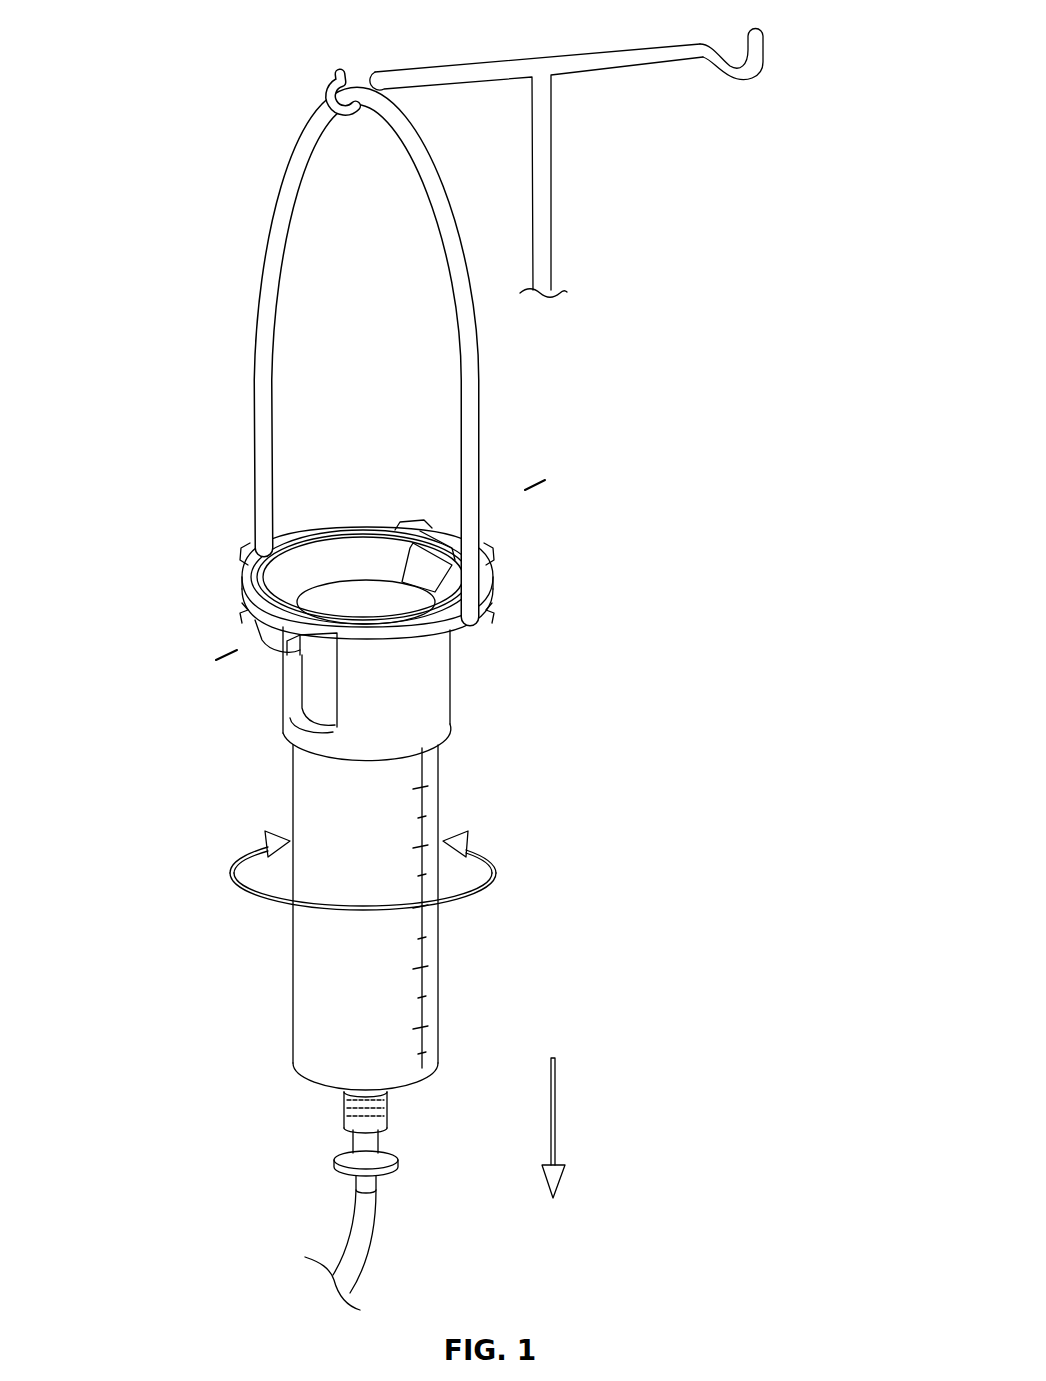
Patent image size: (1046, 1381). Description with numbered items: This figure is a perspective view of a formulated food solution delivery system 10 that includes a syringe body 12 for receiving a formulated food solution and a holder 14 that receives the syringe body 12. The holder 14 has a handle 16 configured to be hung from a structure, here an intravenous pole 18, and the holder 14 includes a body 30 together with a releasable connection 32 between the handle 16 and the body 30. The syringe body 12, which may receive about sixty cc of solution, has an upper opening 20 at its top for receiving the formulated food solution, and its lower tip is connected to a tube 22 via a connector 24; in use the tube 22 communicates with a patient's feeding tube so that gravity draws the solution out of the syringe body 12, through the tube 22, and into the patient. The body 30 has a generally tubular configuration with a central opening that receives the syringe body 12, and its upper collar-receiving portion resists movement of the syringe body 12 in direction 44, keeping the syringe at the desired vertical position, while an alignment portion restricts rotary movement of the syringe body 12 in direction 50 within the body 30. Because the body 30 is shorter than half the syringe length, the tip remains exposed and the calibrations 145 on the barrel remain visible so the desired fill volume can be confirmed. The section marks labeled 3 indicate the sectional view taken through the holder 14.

The formulated food solution delivery system 10 is at (190, 238).
The syringe body 12 is at (273, 948).
The holder 14 is at (457, 687).
The handle 16 is at (467, 363).
The intravenous pole 18 is at (467, 72).
The upper opening 20 is at (345, 557).
The tube 22 is at (352, 1235).
The connector 24 is at (393, 1130).
The body 30 is at (422, 710).
The releasable connection 32 is at (502, 570).
The direction 44 is at (557, 1108).
The direction 50 is at (483, 883).
The calibrations 145 is at (423, 978).
The section line 3 is at (535, 487).